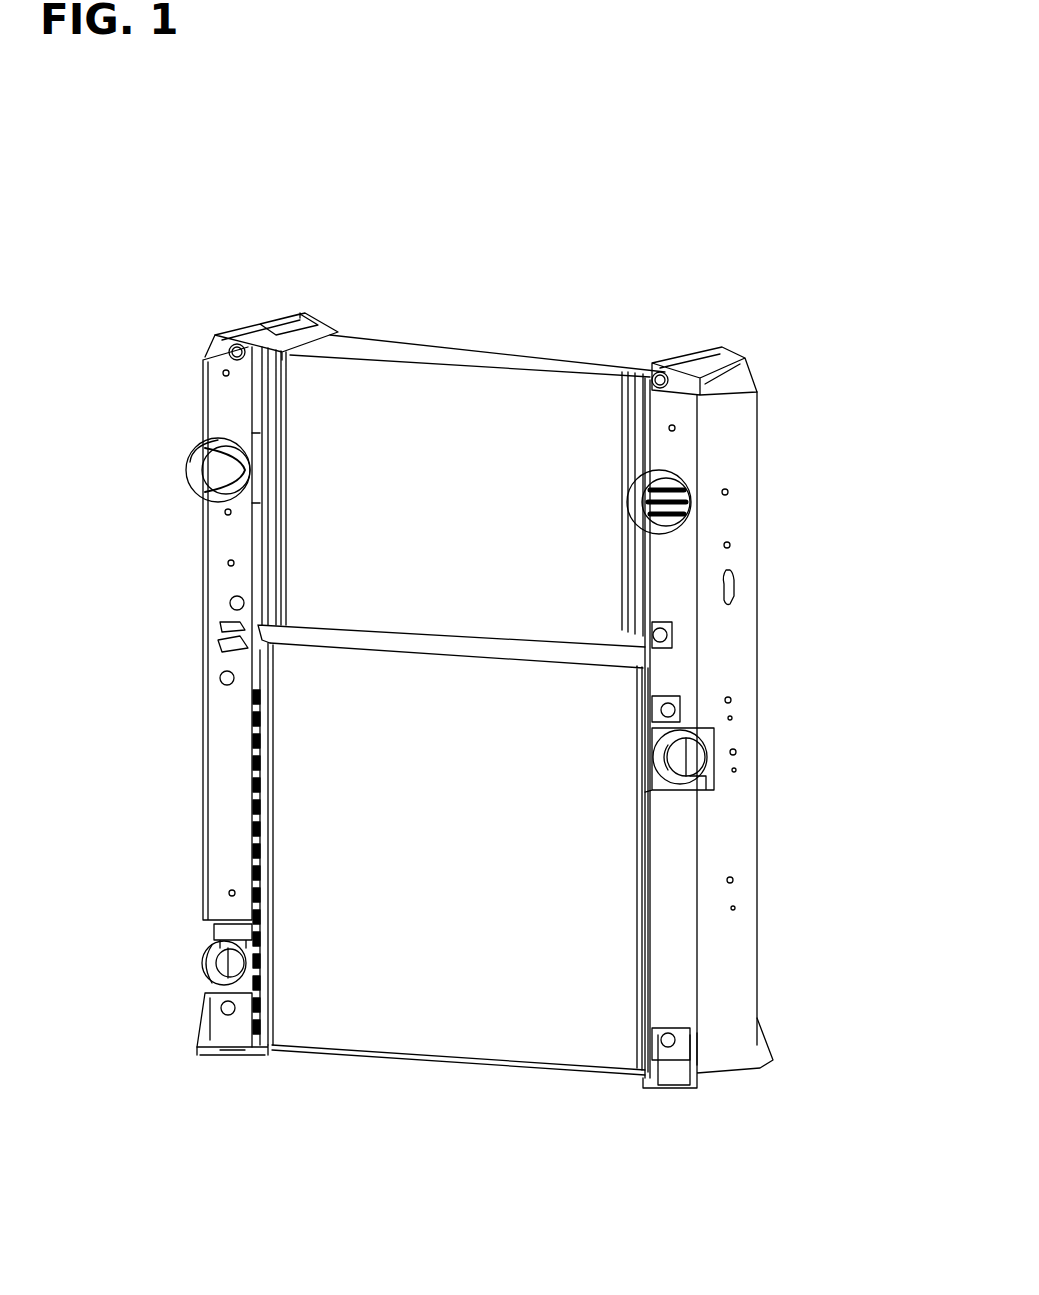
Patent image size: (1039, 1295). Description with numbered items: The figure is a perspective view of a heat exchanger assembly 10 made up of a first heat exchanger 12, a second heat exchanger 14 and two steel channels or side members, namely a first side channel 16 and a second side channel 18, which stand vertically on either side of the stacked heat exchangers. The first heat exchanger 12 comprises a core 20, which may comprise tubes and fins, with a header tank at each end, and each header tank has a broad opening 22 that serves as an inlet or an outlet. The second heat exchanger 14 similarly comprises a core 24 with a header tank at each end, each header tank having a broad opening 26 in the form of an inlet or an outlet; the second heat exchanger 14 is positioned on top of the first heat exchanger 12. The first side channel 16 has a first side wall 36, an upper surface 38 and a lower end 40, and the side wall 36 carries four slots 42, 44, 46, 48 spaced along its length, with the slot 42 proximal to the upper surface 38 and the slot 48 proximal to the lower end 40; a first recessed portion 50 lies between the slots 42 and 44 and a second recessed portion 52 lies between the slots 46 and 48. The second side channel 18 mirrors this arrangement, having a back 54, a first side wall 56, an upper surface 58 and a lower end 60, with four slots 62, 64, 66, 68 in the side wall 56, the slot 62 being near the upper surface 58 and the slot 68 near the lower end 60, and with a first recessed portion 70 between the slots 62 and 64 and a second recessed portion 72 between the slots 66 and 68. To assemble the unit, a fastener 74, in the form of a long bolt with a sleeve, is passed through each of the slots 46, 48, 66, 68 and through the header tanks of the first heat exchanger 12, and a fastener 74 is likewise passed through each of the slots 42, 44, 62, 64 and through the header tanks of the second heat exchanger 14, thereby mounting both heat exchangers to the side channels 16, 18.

The heat exchanger assembly 10 is at (716, 212).
The first heat exchanger 12 is at (353, 1012).
The second heat exchanger 14 is at (430, 400).
The first side channel 16 is at (205, 760).
The second side channel 18 is at (757, 553).
The core 20 is at (448, 1012).
The broad opening 22 is at (228, 962).
The core 24 is at (512, 395).
The broad opening 26 is at (222, 468).
The first side wall 36 is at (222, 832).
The upper surface 38 is at (285, 322).
The lower end 40 is at (238, 1053).
The slot 42 is at (230, 350).
The slot 44 is at (232, 610).
The slot 46 is at (228, 680).
The slot 48 is at (212, 1032).
The first recessed portion 50 is at (245, 500).
The second recessed portion 52 is at (215, 940).
The back 54 is at (740, 917).
The first side wall 56 is at (672, 425).
The upper surface 58 is at (742, 340).
The lower end 60 is at (668, 1087).
The slot 62 is at (668, 388).
The slot 64 is at (668, 630).
The slot 66 is at (675, 708).
The slot 68 is at (672, 1040).
The first recessed portion 70 is at (673, 448).
The second recessed portion 72 is at (712, 792).
The fastener 74 is at (228, 360).